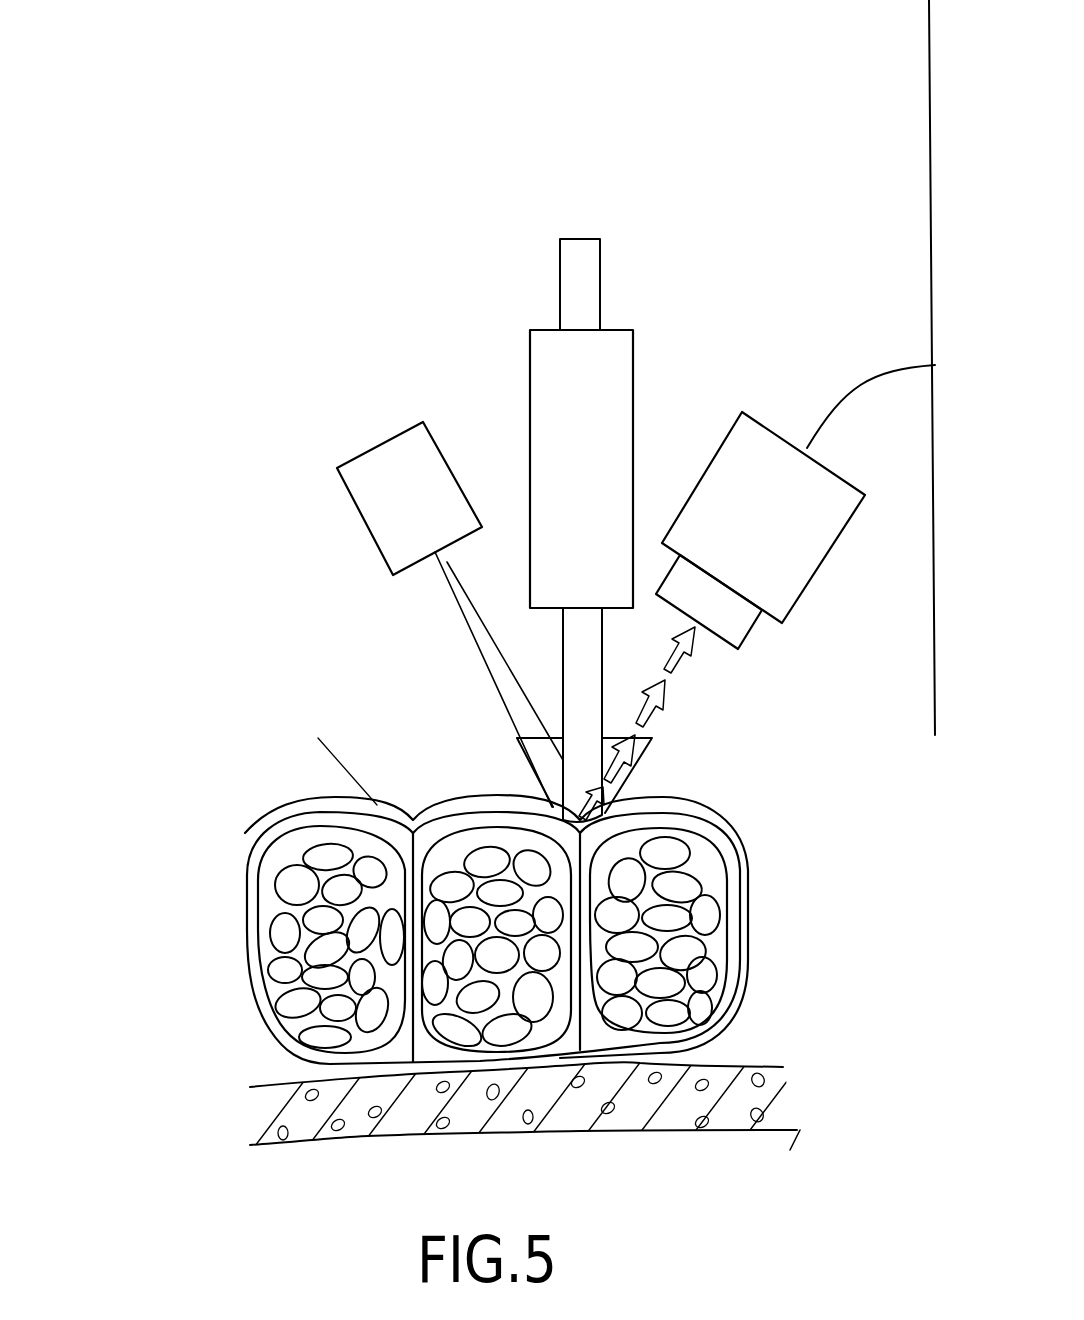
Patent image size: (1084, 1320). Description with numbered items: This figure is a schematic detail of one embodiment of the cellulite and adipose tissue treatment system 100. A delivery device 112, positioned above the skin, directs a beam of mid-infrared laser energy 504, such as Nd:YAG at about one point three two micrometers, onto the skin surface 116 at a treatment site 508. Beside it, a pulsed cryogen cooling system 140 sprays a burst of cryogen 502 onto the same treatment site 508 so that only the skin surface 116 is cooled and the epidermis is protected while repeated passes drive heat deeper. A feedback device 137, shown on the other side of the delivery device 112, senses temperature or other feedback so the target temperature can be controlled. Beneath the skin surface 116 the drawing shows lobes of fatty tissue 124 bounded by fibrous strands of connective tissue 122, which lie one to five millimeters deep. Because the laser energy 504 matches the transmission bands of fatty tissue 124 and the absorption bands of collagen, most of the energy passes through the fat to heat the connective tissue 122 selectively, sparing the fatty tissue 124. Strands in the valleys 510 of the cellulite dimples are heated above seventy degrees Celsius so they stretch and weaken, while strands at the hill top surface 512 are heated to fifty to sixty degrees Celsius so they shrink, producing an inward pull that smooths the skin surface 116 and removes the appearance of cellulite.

The cellulite and adipose tissue treatment system 100 is at (327, 292).
The delivery device 112 is at (550, 445).
The pulsed cryogen cooling system 140 is at (438, 520).
The feedback device 137 is at (795, 543).
The cryogen spray 502 is at (472, 632).
The laser energy 504 is at (590, 683).
The skin surface 116 is at (510, 797).
The treatment site 508 is at (673, 795).
The connective tissue 122 is at (585, 860).
The fatty tissue 124 is at (323, 947).
The hill top surface of the cellulite dimples 512 is at (316, 780).
The valleys of the cellulite dimples 510 is at (415, 820).